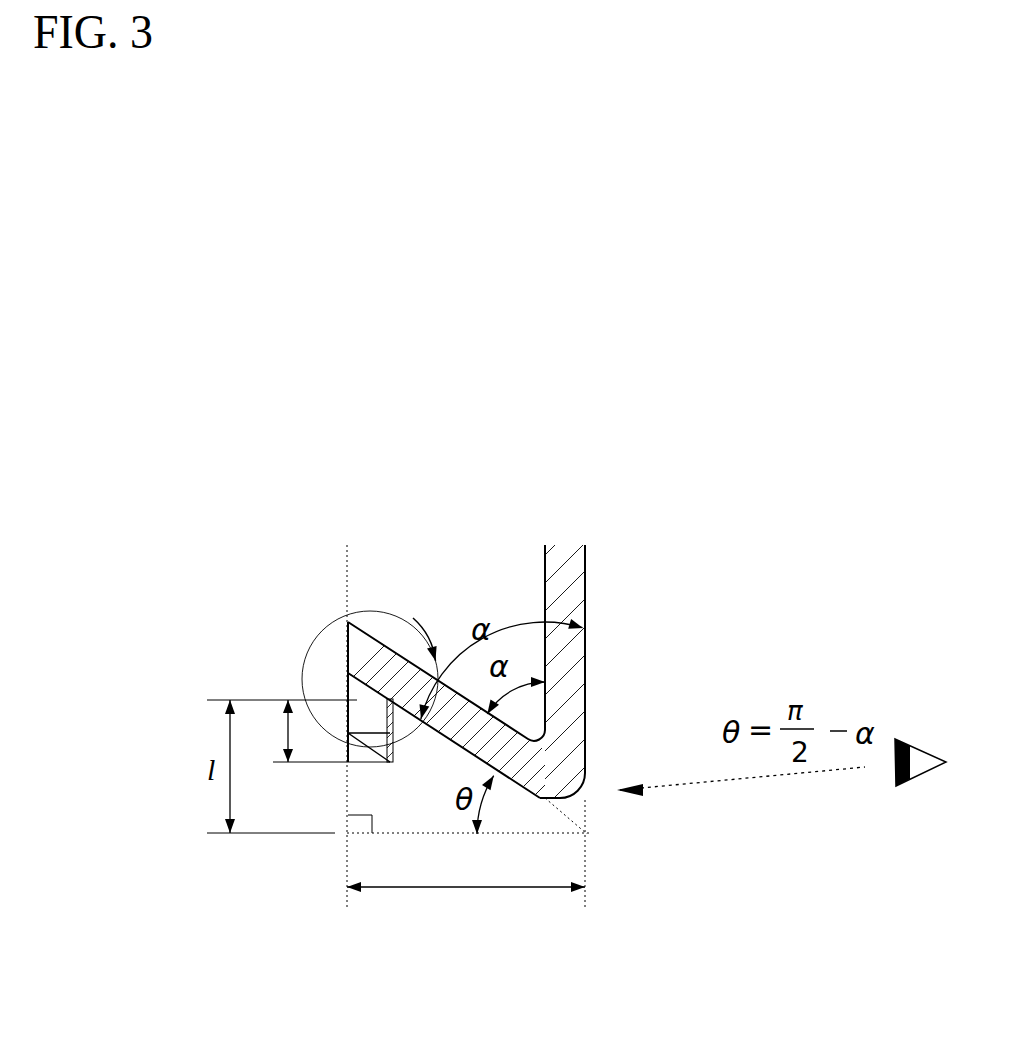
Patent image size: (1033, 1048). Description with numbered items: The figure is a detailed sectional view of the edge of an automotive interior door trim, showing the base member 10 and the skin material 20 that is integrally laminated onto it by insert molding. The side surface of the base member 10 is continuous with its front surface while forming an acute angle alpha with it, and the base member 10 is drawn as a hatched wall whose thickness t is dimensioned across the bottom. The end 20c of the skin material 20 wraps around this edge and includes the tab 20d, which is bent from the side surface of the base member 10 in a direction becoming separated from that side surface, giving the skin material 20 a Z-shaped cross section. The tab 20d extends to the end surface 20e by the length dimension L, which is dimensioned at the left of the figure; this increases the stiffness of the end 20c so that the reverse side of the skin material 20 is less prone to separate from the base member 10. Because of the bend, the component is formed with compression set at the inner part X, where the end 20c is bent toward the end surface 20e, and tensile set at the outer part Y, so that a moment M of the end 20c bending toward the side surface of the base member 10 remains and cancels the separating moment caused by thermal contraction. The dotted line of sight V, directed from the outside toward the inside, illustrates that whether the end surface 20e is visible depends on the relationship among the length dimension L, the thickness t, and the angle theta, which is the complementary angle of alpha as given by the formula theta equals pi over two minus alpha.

The base member 10 is at (360, 584).
The skin material 20 is at (587, 580).
The end of the skin material 20c is at (352, 777).
The tab 20d is at (346, 699).
The end surface 20e is at (346, 765).
The moment M is at (365, 606).
The inner part X is at (413, 618).
The outer part Y is at (347, 620).
The line of sight V is at (800, 772).
The length dimension L is at (321, 731).
The thickness t is at (466, 854).